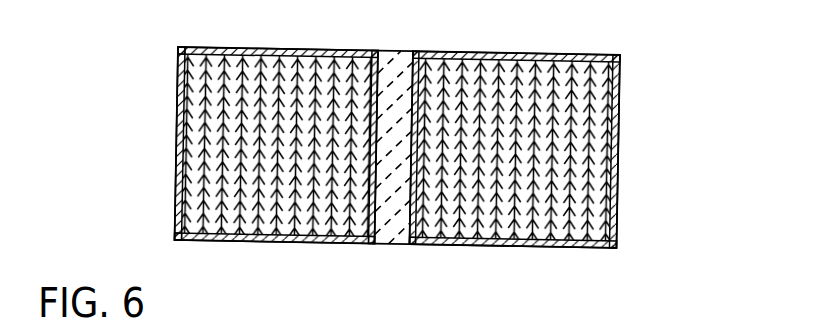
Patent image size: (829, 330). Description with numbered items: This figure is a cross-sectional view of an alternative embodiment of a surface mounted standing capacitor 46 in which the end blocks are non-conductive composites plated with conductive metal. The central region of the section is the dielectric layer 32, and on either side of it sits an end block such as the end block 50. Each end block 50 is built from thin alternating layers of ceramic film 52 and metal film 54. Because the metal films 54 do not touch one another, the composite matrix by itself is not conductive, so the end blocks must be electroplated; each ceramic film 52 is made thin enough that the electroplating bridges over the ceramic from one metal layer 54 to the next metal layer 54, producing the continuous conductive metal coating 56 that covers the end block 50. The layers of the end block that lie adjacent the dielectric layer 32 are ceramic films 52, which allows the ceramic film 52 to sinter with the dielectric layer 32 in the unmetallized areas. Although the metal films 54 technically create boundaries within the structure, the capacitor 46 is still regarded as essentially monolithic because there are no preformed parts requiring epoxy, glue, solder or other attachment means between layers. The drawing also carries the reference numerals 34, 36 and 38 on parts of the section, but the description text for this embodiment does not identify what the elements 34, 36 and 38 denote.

The dielectric layer 32 is at (393, 48).
The inner wall of first panel 34 is at (355, 50).
The second panel fin structure 36 is at (450, 65).
The outer side wall 38 is at (176, 124).
The capacitor 46 is at (662, 72).
The end block 50 is at (625, 143).
The ceramic film 52 is at (214, 232).
The metal film 54 is at (183, 52).
The conductive metal coating 56 is at (253, 50).